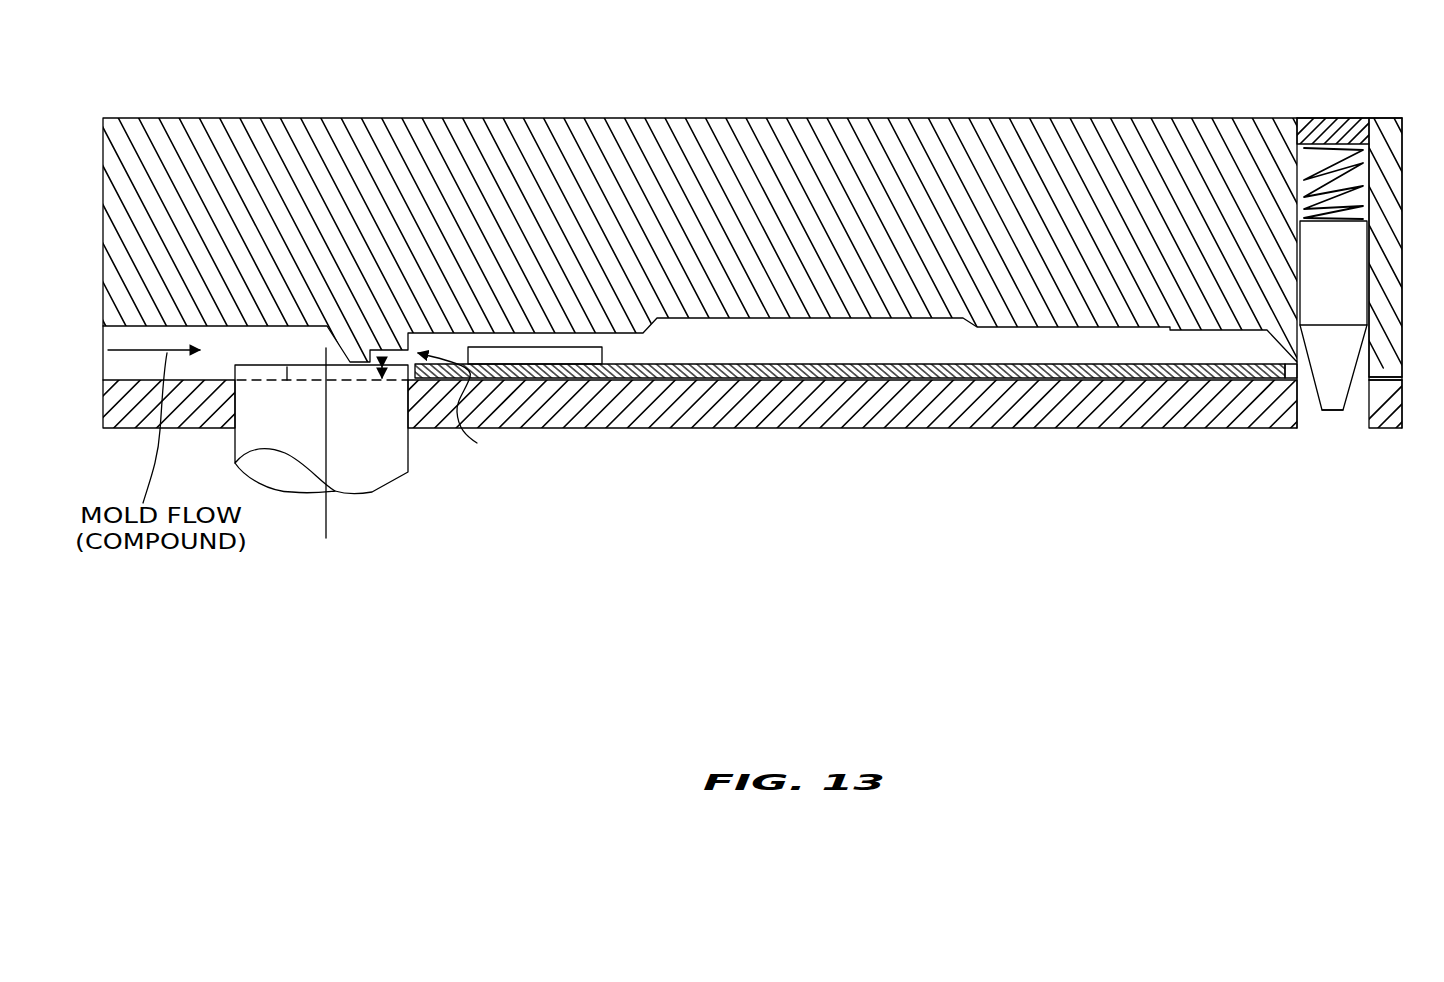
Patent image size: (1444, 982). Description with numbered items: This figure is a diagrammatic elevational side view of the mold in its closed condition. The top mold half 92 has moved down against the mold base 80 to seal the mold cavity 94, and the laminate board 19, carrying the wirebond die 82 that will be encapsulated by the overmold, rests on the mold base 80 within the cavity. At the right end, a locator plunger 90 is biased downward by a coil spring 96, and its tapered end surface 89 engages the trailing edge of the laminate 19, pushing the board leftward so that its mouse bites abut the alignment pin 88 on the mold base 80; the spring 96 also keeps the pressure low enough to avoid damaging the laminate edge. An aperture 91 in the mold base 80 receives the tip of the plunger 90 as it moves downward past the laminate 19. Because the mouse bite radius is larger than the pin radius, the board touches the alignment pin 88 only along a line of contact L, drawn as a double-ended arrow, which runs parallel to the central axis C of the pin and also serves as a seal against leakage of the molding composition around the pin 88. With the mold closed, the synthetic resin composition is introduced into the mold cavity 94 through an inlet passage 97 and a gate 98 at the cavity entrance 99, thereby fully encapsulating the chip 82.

The top mold half 92 is at (467, 135).
The mold base 80 is at (933, 413).
The mold cavity 94 is at (777, 353).
The wirebond die 82 is at (602, 358).
The laminate board 19 is at (512, 378).
The coil spring 96 is at (1355, 168).
The locator plunger 90 is at (1347, 287).
The tapered end surface 89 is at (1323, 405).
The aperture 91 is at (1333, 423).
The alignment pin 88 is at (363, 472).
The inlet passage 97 is at (217, 356).
The gate 98 is at (343, 366).
The cavity entrance 99 is at (460, 405).
The line of contact L is at (382, 368).
The central axis C is at (326, 520).